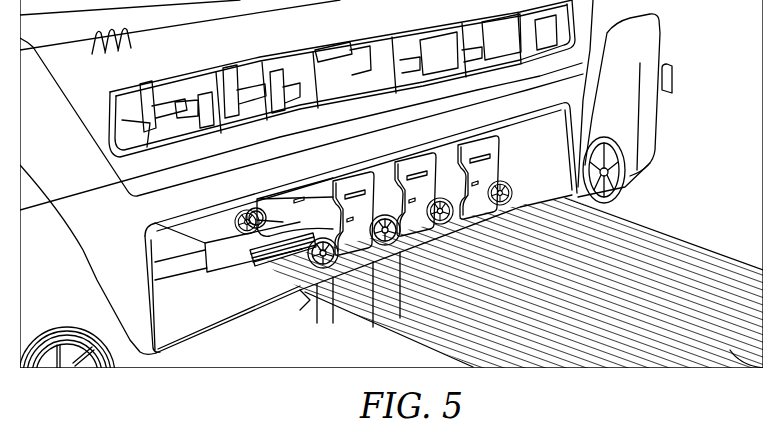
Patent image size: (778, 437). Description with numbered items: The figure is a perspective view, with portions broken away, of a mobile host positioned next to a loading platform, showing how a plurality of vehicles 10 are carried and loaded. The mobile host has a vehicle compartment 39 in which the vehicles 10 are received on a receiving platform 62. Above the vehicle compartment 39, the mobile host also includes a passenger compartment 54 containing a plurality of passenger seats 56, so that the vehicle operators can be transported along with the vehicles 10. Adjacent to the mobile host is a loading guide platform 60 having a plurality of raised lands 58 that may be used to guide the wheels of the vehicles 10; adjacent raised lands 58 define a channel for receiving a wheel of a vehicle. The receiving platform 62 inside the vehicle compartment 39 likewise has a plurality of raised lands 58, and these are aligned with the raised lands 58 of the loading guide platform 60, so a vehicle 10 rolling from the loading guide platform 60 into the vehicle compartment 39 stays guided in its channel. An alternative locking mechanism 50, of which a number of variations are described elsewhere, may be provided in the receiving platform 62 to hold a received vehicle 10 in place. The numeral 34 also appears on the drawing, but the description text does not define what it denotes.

The vehicle 10 is at (482, 172).
The cargo compartment 34 is at (578, 98).
The vehicle compartment 39 is at (555, 143).
The locking mechanism 50 is at (253, 273).
The passenger compartment 54 is at (172, 138).
The passenger seats 56 is at (263, 73).
The raised lands 58 is at (338, 280).
The loading guide platform 60 is at (433, 343).
The receiving platform 62 is at (300, 290).